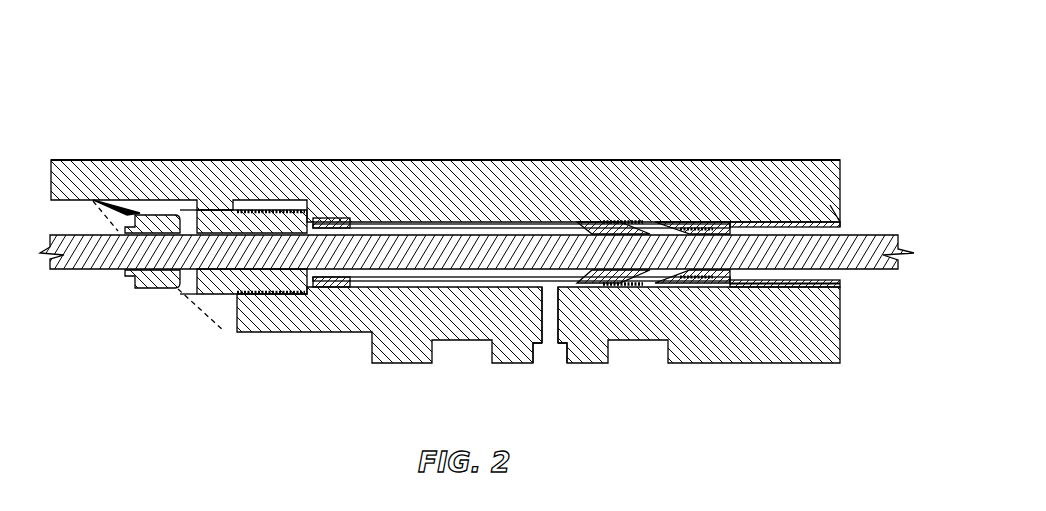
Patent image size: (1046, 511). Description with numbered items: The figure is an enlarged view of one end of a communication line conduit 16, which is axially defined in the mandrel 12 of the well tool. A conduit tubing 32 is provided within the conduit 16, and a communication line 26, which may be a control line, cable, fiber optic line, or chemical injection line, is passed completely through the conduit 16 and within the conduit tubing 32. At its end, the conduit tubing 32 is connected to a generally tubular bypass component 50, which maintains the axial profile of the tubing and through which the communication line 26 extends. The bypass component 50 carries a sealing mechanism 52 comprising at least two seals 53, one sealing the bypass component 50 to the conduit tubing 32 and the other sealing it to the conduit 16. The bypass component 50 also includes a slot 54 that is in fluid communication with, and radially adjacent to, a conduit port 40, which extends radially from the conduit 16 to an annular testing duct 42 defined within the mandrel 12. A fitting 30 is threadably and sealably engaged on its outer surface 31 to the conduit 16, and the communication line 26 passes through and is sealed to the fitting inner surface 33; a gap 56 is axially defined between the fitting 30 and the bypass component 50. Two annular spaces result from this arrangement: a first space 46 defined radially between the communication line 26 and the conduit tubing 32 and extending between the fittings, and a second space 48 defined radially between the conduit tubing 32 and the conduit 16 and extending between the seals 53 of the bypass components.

The mandrel 12 is at (452, 172).
The communication line conduit 16 is at (568, 325).
The communication line 26 is at (867, 272).
The fitting 30 is at (192, 311).
The fitting outer surface 31 is at (252, 321).
The conduit tubing 32 is at (863, 191).
The fitting inner surface 33 is at (246, 291).
The conduit port 40 is at (579, 349).
The testing duct 42 is at (525, 377).
The first space 46 is at (833, 235).
The second space 48 is at (792, 345).
The bypass component 50 is at (489, 234).
The sealing mechanism 52 is at (668, 154).
The seal 53 is at (664, 264).
The slot 54 is at (521, 199).
The gap 56 is at (301, 202).